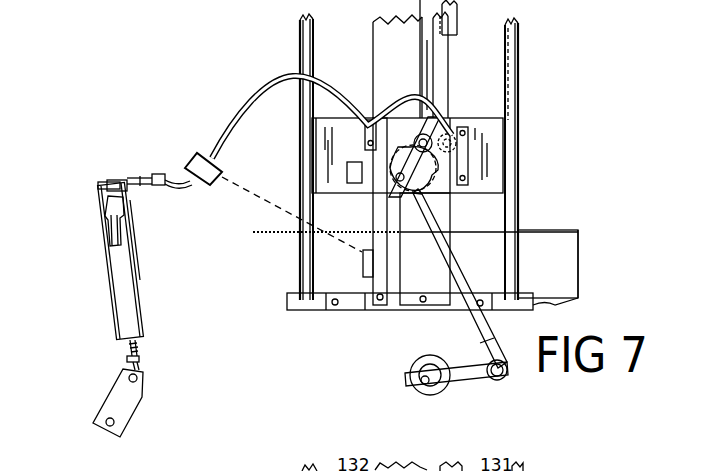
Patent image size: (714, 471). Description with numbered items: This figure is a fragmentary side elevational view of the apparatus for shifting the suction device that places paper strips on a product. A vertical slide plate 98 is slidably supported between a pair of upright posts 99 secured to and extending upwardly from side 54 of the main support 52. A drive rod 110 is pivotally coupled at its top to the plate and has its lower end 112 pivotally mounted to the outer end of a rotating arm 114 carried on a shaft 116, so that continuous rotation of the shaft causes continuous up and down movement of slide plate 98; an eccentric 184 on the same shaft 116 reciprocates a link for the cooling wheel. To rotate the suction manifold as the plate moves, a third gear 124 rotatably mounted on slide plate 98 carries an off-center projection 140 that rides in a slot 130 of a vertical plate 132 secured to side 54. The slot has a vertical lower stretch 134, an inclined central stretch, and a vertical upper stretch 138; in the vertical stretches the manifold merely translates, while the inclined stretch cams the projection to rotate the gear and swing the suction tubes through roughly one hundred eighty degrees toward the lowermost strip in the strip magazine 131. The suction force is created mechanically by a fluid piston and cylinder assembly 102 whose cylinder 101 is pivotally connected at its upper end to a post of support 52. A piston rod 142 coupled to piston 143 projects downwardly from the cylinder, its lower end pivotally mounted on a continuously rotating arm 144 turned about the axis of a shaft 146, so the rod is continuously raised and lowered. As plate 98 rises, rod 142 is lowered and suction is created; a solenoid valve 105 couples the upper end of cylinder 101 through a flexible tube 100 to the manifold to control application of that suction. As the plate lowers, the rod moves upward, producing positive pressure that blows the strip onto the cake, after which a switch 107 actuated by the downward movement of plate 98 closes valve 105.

The main support 52 is at (590, 236).
The upright side 54 is at (580, 284).
The vertical slide plate 98 is at (497, 146).
The upright posts 99 is at (303, 52).
The flexible tube 100 is at (218, 138).
The cylinder 101 is at (140, 273).
The fluid piston and cylinder assembly 102 is at (147, 302).
The solenoid valve 105 is at (187, 157).
The switch 107 is at (367, 302).
The drive rod 110 is at (447, 262).
The lower end of drive rod 112 is at (494, 355).
The rotating arm 114 is at (458, 368).
The shaft 116 is at (418, 387).
The third gear 124 is at (397, 163).
The slot 130 is at (429, 36).
The strip magazine 131 is at (458, 15).
The vertical plate 132 is at (372, 57).
The vertical lower stretch 134 is at (393, 260).
The vertical upper stretch 138 is at (428, 80).
The projection 140 is at (412, 190).
The piston rod 142 is at (143, 350).
The piston 143 is at (110, 207).
The continuously rotating arm 144 is at (125, 405).
The shaft 146 is at (110, 432).
The eccentric 184 is at (455, 398).